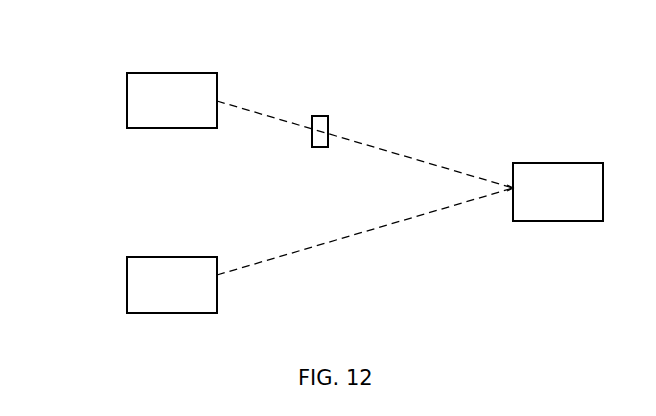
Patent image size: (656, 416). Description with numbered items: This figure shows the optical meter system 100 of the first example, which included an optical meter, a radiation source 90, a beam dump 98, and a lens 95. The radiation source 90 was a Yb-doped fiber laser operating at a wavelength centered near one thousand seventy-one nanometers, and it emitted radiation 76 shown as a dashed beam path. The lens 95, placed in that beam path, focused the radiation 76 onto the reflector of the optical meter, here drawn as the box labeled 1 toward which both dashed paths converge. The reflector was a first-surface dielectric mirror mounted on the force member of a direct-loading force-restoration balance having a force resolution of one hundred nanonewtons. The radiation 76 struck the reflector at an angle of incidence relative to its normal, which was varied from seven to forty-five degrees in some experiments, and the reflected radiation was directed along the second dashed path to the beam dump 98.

The optical meter system 100 is at (53, 37).
The radiation source 90 is at (145, 97).
The beam dump 98 is at (145, 281).
The lens 95 is at (318, 120).
The receiving device 1 is at (557, 177).
The radiation 76 is at (346, 238).